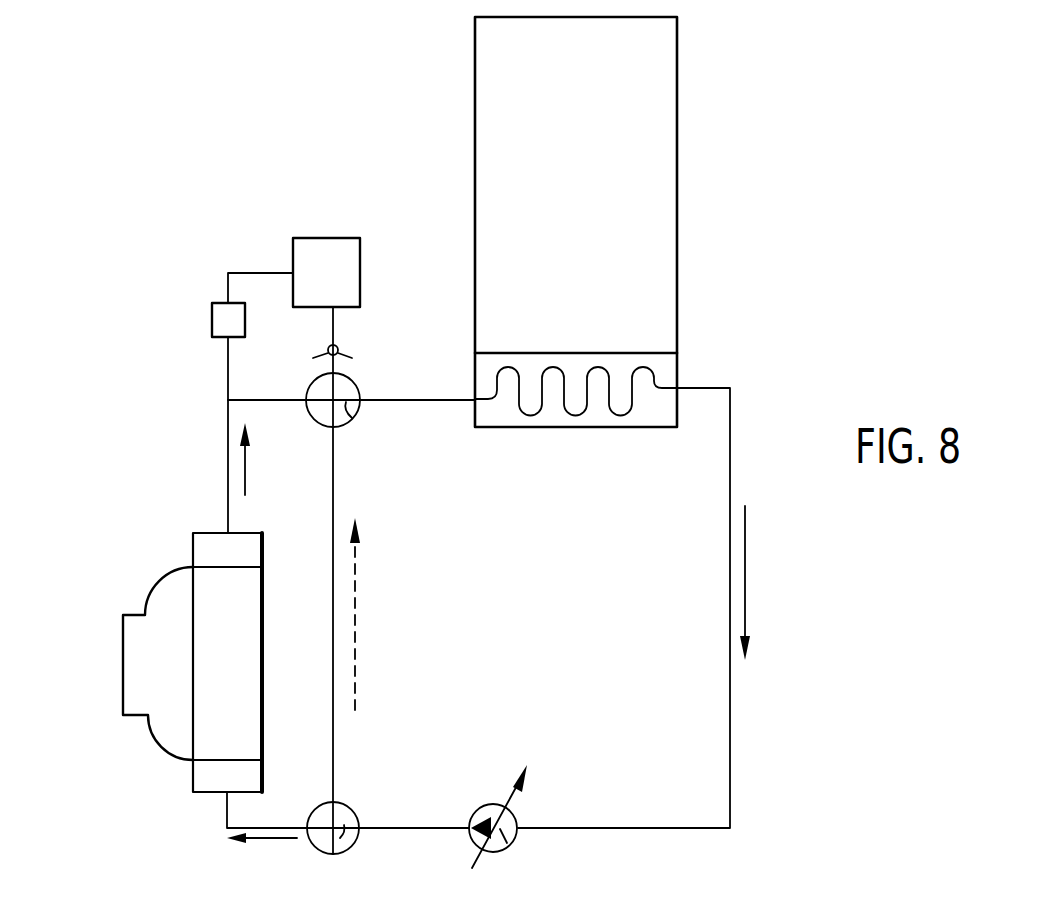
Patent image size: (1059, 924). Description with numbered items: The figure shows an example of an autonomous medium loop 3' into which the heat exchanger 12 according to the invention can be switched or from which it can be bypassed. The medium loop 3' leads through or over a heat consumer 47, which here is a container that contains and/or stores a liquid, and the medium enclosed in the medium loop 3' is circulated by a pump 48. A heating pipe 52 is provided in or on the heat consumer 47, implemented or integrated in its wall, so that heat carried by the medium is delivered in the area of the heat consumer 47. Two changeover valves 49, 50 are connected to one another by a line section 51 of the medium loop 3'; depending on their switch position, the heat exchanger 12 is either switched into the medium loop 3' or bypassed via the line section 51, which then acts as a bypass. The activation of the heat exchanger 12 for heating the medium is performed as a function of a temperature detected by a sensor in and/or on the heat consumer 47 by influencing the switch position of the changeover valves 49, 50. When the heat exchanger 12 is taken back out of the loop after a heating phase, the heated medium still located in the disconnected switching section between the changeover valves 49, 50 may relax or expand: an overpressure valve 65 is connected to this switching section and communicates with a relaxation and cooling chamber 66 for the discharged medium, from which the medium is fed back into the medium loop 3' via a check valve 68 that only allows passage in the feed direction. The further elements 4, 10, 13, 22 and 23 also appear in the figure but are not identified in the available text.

The motor housing 4 is at (132, 600).
The stator 10 is at (240, 659).
The heat exchanger 12 is at (180, 780).
The upper winding head 13 is at (210, 553).
The coolant outlet line 22 is at (218, 806).
The coolant inlet line 23 is at (228, 447).
The heat consumer 47 is at (692, 204).
The pump 48 is at (508, 846).
The changeover valve 49 is at (346, 848).
The changeover valve 50 is at (352, 418).
The line section 51 is at (334, 755).
The heating pipe 52 is at (576, 415).
The overpressure valve 65 is at (212, 318).
The relaxation and cooling chamber 66 is at (325, 260).
The check valve 68 is at (342, 347).
The medium loop 3' is at (661, 608).